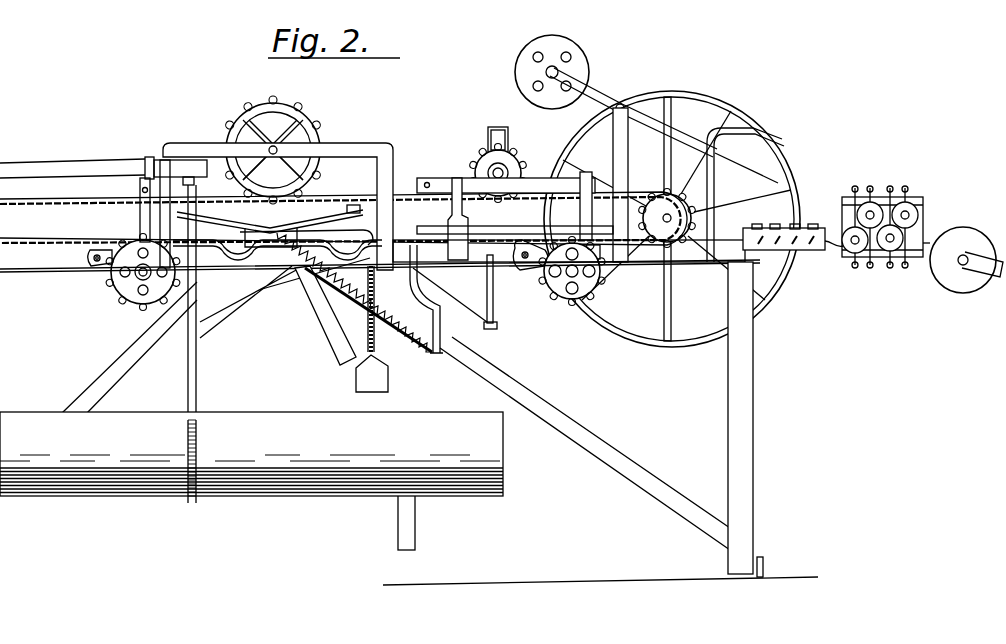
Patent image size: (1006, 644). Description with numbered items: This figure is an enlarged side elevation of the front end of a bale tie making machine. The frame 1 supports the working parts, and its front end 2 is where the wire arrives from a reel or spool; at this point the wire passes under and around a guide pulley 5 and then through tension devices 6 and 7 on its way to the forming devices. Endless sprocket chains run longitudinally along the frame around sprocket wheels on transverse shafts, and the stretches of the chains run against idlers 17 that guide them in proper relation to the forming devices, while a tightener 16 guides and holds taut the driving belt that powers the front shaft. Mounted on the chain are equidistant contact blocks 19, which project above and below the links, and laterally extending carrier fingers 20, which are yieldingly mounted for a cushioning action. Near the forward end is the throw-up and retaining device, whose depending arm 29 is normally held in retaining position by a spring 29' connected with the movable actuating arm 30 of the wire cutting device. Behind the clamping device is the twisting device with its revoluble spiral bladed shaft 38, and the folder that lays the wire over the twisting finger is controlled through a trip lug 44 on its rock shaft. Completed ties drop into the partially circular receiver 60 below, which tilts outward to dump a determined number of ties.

The frame 1 is at (40, 170).
The front end 2 is at (730, 240).
The guide pulley 5 is at (952, 231).
The tension device 6 is at (871, 212).
The tension device 7 is at (800, 228).
The tightener 16 is at (578, 65).
The idlers 17 is at (303, 122).
The contact block 19 is at (77, 203).
The carrier finger 20 is at (653, 193).
The depending arm 29 is at (470, 292).
The spring 29' is at (312, 315).
The actuating arm 30 is at (443, 347).
The spiral bladed shaft 38 is at (232, 263).
The trip lug 44 is at (358, 380).
The receiver 60 is at (251, 454).